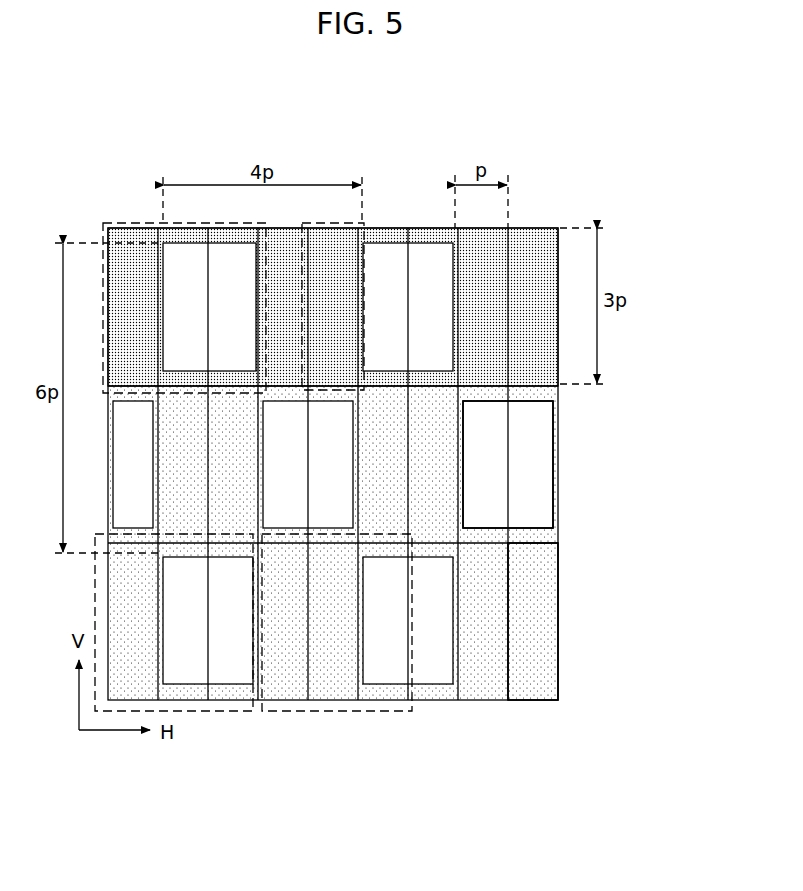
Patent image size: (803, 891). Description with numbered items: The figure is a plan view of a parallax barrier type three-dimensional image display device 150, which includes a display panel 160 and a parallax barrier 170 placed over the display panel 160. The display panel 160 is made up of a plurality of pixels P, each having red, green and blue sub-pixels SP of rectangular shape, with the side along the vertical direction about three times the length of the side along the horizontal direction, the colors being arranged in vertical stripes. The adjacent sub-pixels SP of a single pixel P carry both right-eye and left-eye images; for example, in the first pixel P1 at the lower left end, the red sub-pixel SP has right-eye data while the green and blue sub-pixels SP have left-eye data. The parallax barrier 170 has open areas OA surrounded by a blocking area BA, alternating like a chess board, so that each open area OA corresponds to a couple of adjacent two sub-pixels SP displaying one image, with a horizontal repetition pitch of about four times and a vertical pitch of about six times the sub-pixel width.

The three-dimensional image display device 150 is at (555, 147).
The display panel 160 is at (385, 160).
The parallax barrier 170 is at (652, 508).
The open area OA is at (543, 512).
The blocking area BA is at (543, 568).
The pixel P is at (135, 222).
The sub-pixel SP is at (342, 222).
The first pixel P1 is at (210, 712).